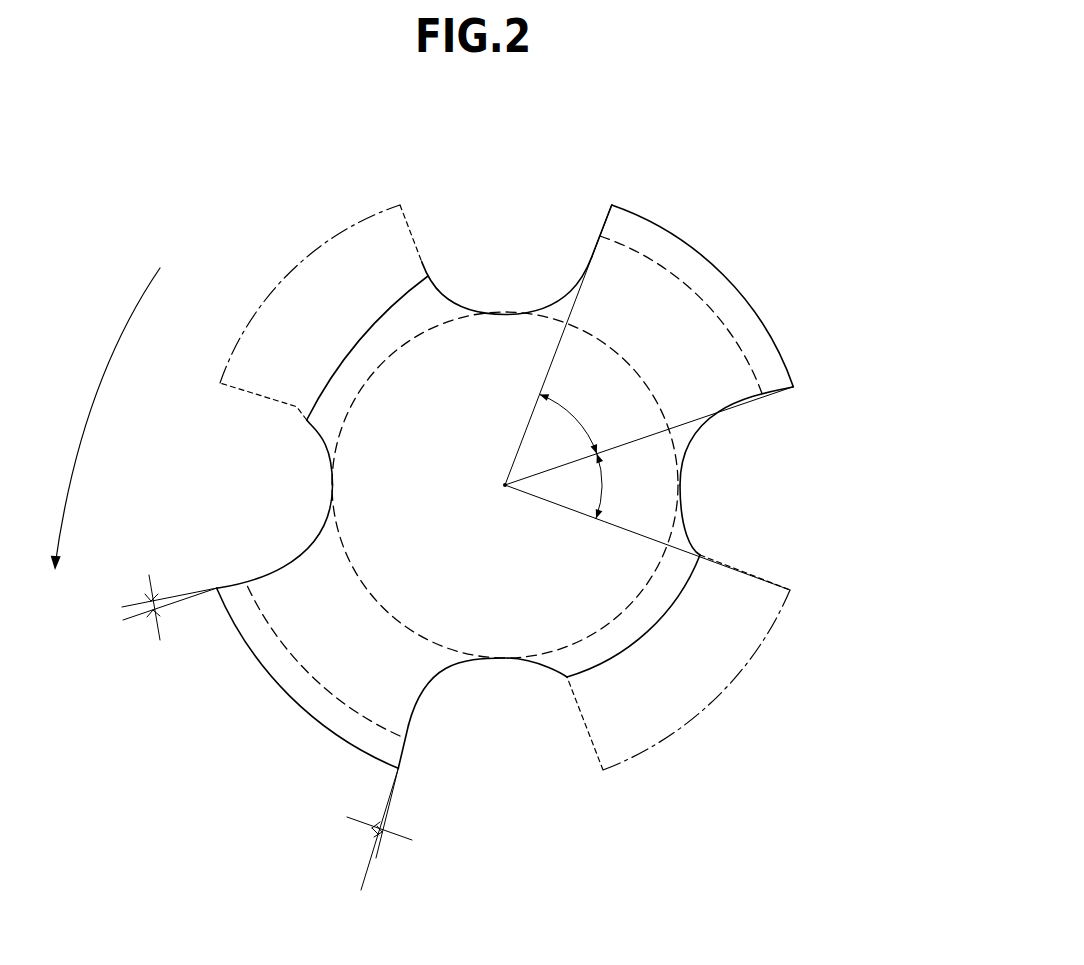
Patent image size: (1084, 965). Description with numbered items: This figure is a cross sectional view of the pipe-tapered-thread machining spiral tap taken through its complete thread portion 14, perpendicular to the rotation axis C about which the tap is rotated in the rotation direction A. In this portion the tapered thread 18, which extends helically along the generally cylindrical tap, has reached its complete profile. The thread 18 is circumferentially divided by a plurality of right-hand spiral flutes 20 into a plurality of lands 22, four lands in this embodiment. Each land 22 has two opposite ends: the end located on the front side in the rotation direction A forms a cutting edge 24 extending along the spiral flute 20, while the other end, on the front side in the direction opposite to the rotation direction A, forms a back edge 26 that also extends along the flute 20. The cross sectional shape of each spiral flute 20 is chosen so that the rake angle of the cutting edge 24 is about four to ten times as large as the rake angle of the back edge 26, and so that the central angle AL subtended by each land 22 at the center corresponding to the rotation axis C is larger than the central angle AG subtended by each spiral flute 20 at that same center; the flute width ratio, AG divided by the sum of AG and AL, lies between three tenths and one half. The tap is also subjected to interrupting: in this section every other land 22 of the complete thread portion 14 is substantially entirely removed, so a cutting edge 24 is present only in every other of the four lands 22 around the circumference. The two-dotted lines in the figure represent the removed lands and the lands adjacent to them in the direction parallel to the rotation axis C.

The complete thread portion 14 is at (502, 533).
The tapered thread 18 is at (721, 271).
The spiral flute 20 is at (680, 473).
The land 22 is at (531, 482).
The cutting edge 24 is at (609, 203).
The back edge 26 is at (792, 386).
The direction of rotation A is at (101, 435).
The rotation axis C is at (507, 491).
The central angle subtended by each land AL is at (569, 424).
The central angle subtended by each spiral flute AG is at (614, 486).